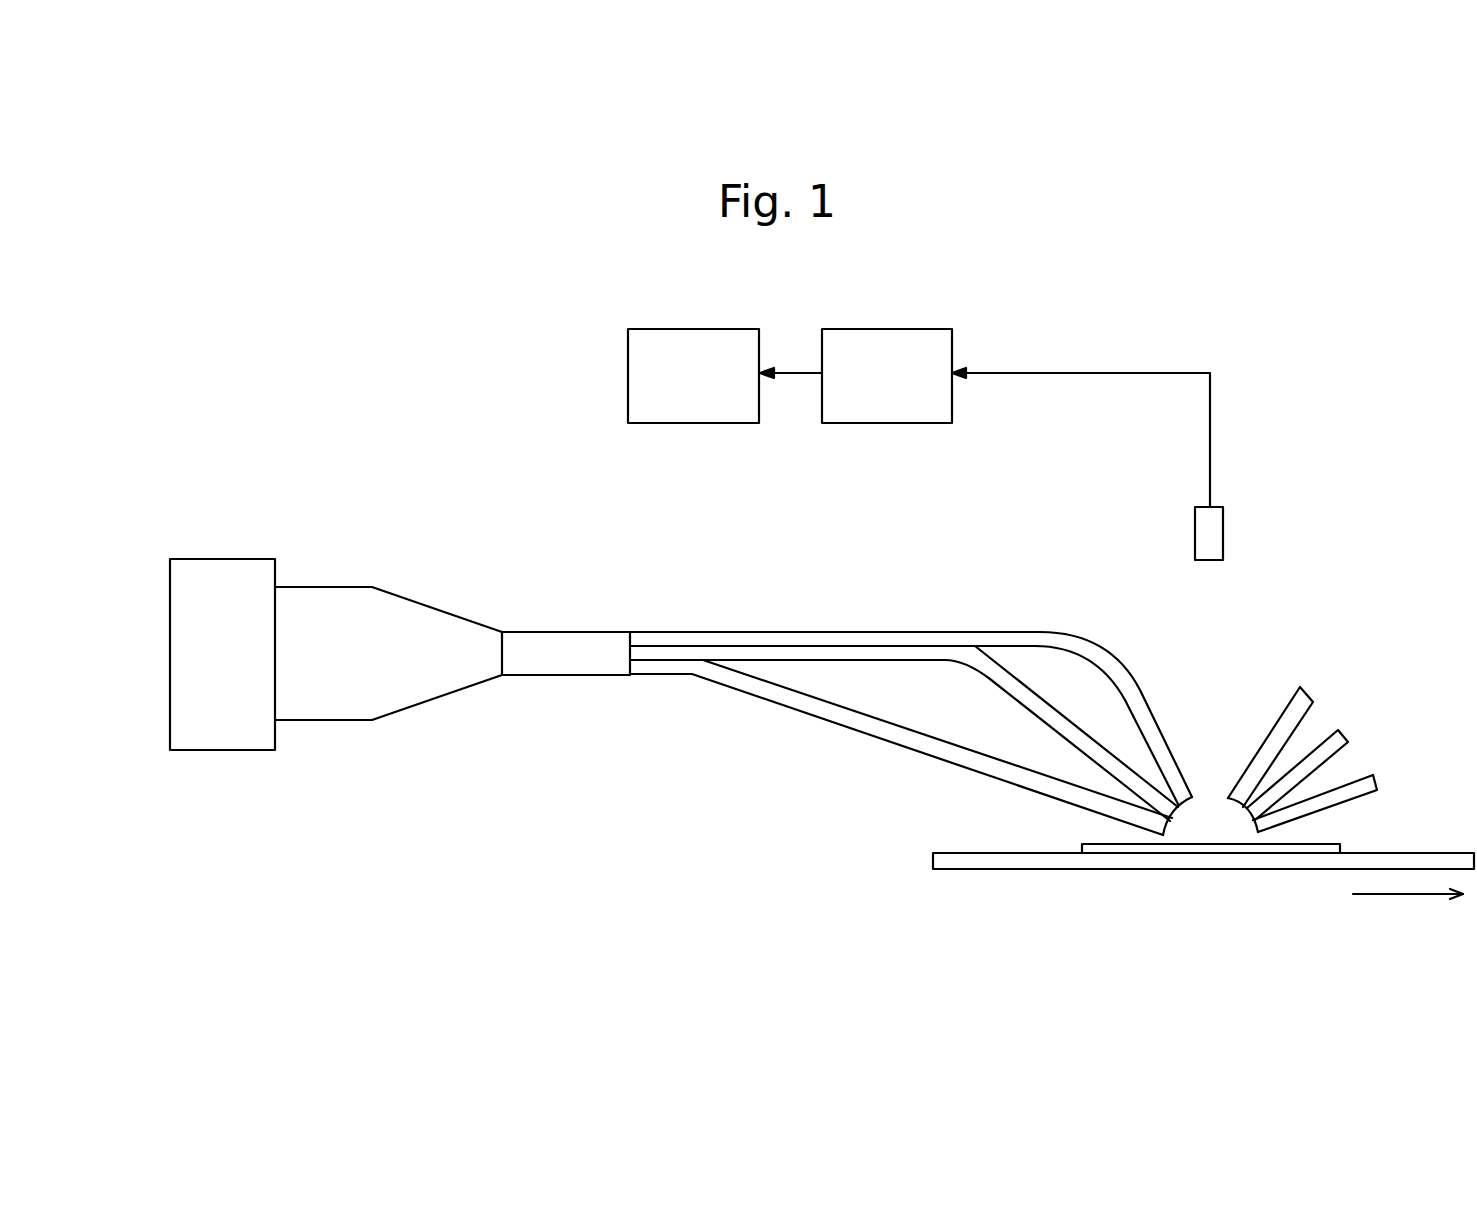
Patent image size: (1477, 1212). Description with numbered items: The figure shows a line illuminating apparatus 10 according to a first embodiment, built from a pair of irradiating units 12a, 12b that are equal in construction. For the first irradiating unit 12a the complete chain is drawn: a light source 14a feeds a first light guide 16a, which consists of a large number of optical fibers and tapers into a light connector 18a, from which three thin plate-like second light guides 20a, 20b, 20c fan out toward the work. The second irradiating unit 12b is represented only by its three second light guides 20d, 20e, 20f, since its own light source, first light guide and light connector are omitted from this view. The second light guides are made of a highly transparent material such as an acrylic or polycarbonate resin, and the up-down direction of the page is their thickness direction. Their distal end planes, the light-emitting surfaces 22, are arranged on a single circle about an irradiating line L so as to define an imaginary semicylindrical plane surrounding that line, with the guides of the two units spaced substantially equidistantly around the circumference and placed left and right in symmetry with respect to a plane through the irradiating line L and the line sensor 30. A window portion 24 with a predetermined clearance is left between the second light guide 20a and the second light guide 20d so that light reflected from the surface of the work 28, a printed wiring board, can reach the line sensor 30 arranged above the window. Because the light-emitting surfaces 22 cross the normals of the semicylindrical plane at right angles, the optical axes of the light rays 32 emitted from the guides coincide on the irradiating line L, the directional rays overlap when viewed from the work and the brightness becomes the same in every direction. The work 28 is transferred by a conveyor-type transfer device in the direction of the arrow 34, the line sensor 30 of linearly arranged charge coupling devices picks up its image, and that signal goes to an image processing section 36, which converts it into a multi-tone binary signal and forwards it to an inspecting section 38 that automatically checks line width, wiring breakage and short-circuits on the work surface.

The line illuminating apparatus 10 is at (1065, 590).
The first irradiating unit 12a is at (911, 733).
The second irradiating unit 12b is at (1346, 711).
The light source 14a is at (222, 559).
The first light guide 16a is at (350, 586).
The light connector 18a is at (570, 632).
The second light guide 20a is at (1130, 686).
The second light guide 20b is at (1043, 716).
The second light guide 20c is at (957, 766).
The second light guide 20d is at (1283, 688).
The second light guide 20e is at (1340, 752).
The second light guide 20f is at (1360, 797).
The light-emitting surfaces 22 is at (1180, 818).
The window portion 24 is at (1210, 800).
The work 28 is at (1108, 847).
The line sensor 30 is at (1223, 528).
The light rays 32 is at (992, 870).
The arrow 34 is at (1413, 898).
The image processing section 36 is at (886, 423).
The inspecting section 38 is at (698, 423).
The irradiating line L is at (1210, 843).